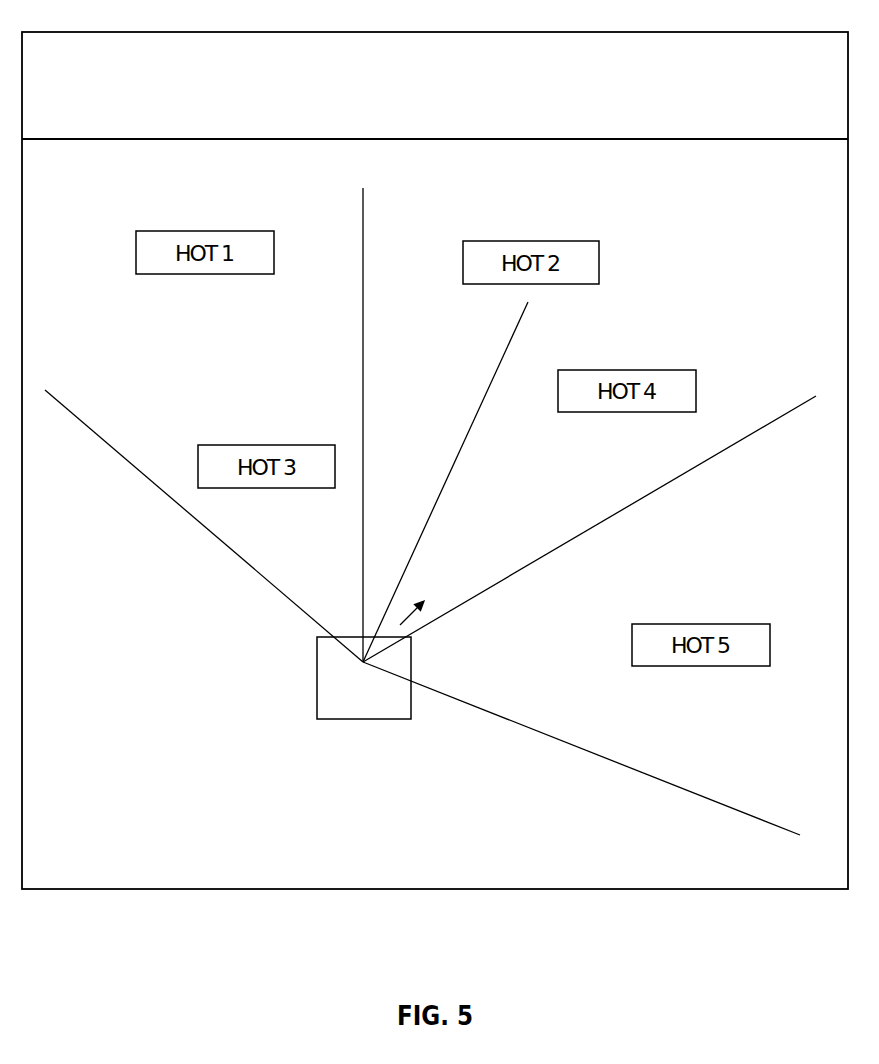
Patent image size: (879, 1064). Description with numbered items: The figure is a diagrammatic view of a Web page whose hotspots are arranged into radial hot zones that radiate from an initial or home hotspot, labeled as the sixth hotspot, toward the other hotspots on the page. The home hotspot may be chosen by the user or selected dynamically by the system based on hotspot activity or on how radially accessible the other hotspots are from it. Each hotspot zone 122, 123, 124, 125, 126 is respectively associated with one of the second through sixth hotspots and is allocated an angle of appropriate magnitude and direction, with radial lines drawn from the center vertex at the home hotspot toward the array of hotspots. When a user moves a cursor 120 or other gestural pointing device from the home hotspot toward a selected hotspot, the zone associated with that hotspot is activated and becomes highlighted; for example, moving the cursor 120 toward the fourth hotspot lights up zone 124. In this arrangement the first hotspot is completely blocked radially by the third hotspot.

The cursor 120 is at (403, 617).
The hotspot zone 122 is at (449, 404).
The hotspot zone 123 is at (296, 556).
The hotspot zone 124 is at (555, 526).
The hotspot zone 125 is at (634, 726).
The hotspot zone 126 is at (304, 764).